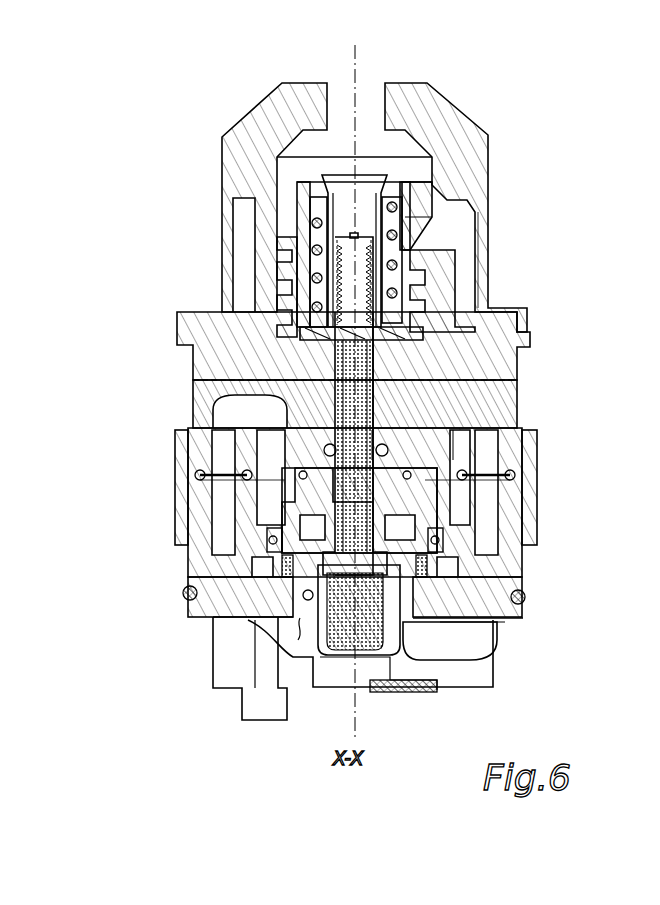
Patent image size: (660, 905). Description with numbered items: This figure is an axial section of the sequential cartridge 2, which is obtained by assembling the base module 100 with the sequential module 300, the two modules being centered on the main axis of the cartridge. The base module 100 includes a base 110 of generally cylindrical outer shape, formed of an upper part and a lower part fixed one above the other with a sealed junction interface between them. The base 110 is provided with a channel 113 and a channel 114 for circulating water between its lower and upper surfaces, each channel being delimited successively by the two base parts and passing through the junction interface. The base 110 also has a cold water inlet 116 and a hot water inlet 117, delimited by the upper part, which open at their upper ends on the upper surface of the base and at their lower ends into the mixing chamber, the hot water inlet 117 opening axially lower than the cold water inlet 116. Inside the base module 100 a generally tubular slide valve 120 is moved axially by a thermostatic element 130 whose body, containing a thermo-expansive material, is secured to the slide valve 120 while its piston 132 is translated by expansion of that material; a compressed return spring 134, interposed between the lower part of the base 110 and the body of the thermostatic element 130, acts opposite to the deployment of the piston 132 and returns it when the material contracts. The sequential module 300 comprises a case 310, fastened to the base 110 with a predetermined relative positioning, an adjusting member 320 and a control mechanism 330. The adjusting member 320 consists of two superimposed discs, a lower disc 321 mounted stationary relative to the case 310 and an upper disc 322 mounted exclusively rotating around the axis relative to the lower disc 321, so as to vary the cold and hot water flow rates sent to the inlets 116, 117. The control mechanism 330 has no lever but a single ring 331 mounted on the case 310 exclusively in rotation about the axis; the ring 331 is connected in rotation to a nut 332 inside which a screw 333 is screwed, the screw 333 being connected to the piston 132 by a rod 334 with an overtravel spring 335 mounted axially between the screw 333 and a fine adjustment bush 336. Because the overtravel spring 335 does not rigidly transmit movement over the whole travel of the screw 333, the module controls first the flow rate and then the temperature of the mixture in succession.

The sequential cartridge 2 is at (84, 452).
The base module 100 is at (186, 565).
The base 110 is at (210, 681).
The channel 113 is at (228, 492).
The channel 114 is at (478, 545).
The cold water inlet 116 is at (268, 527).
The hot water inlet 117 is at (455, 500).
The slide valve 120 is at (445, 523).
The thermostatic element 130 is at (392, 592).
The piston 132 is at (480, 480).
The return spring 134 is at (307, 638).
The sequential module 300 is at (190, 380).
The case 310 is at (175, 320).
The adjusting member 320 is at (424, 457).
The lower disc 321 is at (515, 452).
The upper disc 322 is at (520, 398).
The control mechanism 330 is at (218, 138).
The ring 331 is at (458, 143).
The nut 332 is at (440, 240).
The screw 333 is at (458, 280).
The rod 334 is at (455, 330).
The overtravel spring 335 is at (305, 222).
The fine adjustment bush 336 is at (275, 280).